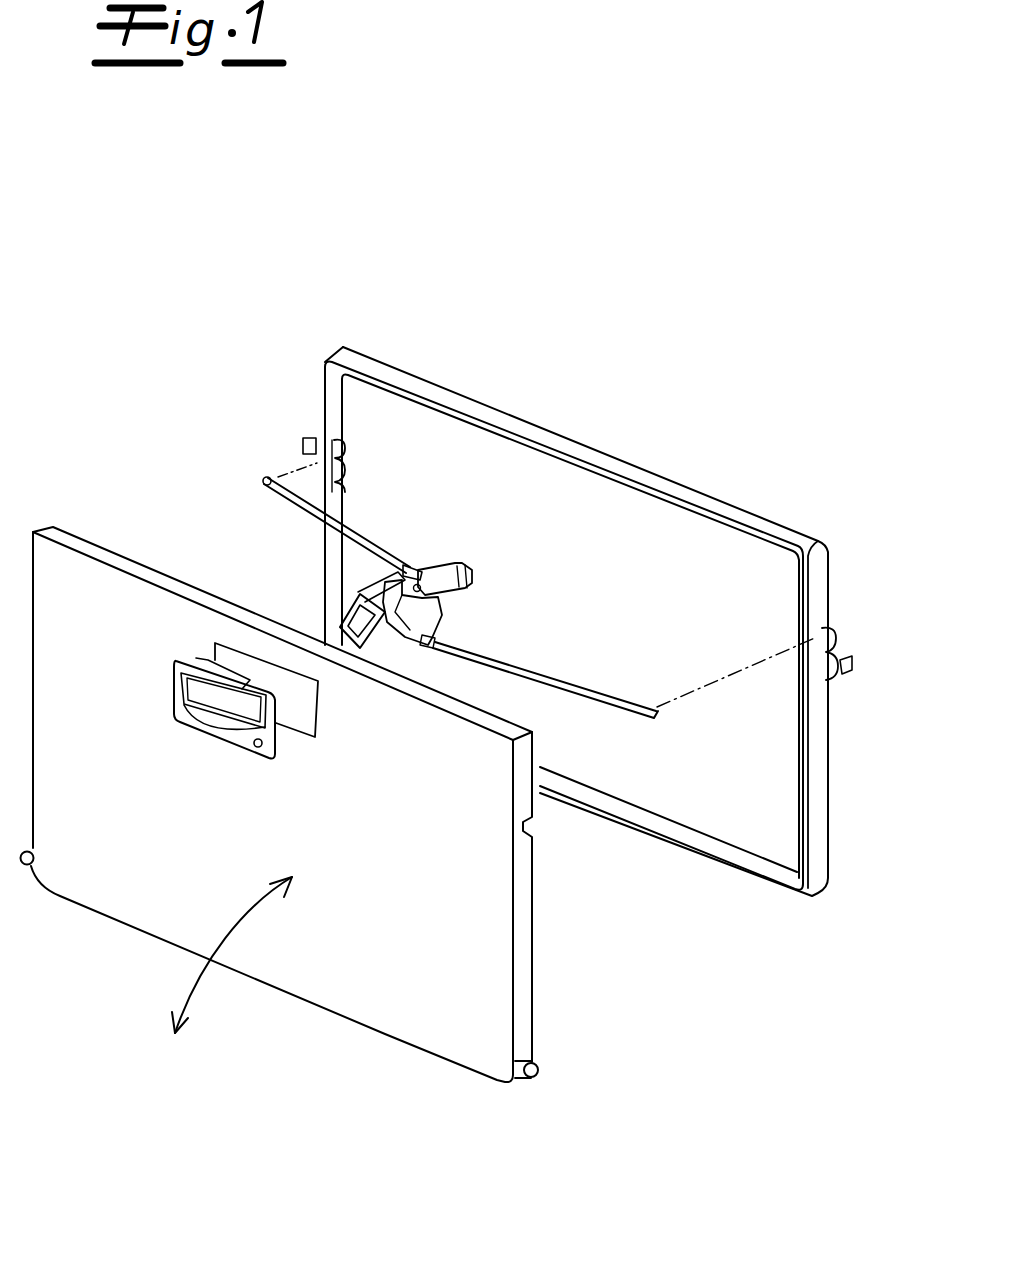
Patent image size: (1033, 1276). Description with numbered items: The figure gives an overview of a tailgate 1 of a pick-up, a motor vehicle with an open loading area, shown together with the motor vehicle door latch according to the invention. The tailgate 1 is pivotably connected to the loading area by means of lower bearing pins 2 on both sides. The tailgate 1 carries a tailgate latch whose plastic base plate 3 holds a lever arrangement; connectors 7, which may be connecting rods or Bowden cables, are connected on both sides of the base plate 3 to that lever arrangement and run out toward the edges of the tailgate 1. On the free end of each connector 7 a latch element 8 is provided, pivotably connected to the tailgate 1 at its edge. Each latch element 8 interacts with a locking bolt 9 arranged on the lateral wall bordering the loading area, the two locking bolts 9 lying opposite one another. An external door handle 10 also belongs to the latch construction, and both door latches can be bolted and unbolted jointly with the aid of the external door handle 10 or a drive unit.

The tailgate 1 is at (290, 1057).
The lower bearing pins 2 is at (26, 872).
The plastic base plate 3 is at (320, 598).
The connectors 7 is at (300, 506).
The latch element 8 is at (340, 448).
The locking bolts 9 is at (313, 440).
The external door handle 10 is at (184, 652).